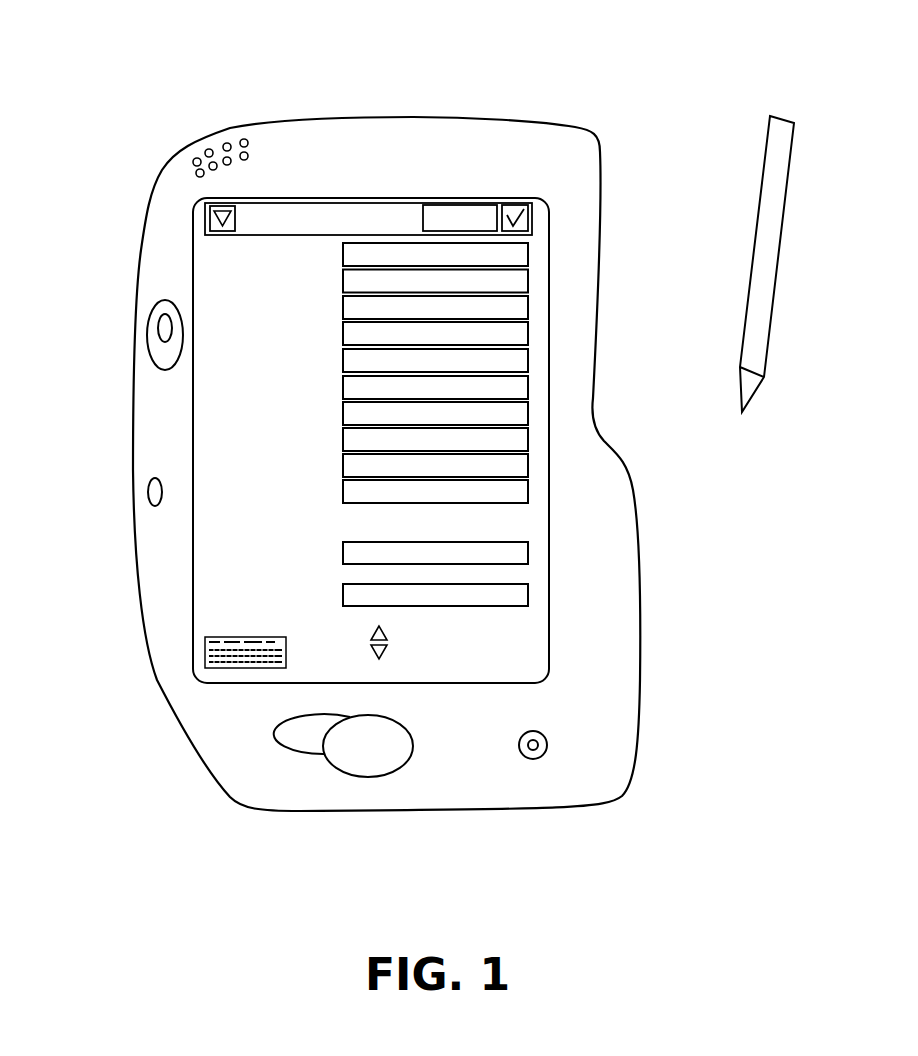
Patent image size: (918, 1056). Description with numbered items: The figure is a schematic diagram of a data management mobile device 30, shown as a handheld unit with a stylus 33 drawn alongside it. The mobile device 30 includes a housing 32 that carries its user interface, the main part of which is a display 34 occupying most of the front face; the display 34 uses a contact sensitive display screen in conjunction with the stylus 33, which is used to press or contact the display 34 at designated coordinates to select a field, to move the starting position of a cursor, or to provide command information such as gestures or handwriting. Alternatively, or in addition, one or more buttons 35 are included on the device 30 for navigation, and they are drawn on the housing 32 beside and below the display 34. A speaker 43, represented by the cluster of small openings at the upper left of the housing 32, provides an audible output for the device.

The mobile device 30 is at (384, 415).
The housing 32 is at (413, 117).
The stylus 33 is at (776, 285).
The display 34 is at (498, 490).
The buttons 35 is at (153, 328).
The speaker 43 is at (228, 143).